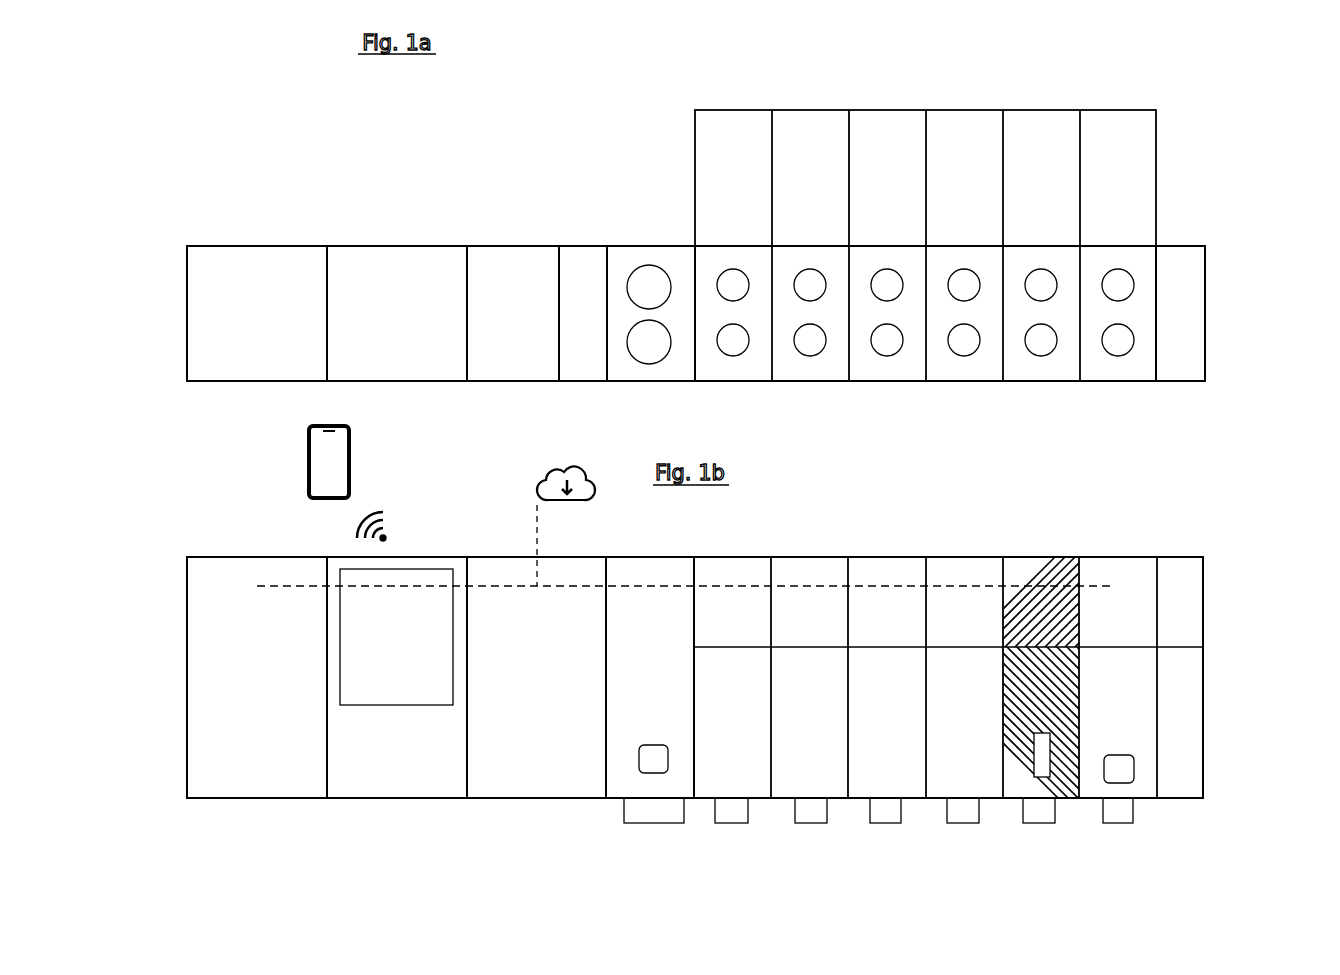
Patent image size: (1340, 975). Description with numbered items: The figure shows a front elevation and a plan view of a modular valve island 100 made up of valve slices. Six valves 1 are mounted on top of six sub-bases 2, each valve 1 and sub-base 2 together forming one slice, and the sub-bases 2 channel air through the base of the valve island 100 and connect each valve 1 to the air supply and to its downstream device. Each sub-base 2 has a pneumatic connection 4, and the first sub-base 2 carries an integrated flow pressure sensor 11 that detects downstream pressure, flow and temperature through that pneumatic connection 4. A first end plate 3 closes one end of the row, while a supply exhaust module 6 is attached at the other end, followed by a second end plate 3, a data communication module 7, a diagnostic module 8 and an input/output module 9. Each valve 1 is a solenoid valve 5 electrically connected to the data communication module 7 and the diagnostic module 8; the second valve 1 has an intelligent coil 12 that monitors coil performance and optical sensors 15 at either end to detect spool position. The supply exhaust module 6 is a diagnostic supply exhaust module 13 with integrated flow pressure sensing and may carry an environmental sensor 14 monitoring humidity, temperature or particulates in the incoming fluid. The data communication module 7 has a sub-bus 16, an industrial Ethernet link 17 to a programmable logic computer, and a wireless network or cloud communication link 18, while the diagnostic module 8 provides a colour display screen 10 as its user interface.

In FIG. 1A, the valve island 100 is at (272, 117).
In FIG. 1B, the valve island 100 is at (272, 911).
In FIG. 1A, the valve 1 is at (950, 209).
In FIG. 1A, the sub-base 2 is at (978, 422).
In FIG. 1A, the end plate 3 is at (920, 261).
In FIG. 1B, the pneumatic connection 4 is at (942, 843).
In FIG. 1B, the solenoid valve 5 is at (997, 677).
In FIG. 1A, the supply exhaust module 6 is at (648, 261).
In FIG. 1A, the data communication module 7 is at (505, 261).
In FIG. 1A, the diagnostic module 8 is at (397, 261).
In FIG. 1B, the diagnostic module 8 is at (397, 677).
In FIG. 1A, the input/output module 9 is at (257, 261).
In FIG. 1B, the input/output module 9 is at (257, 677).
In FIG. 1B, the colour display screen 10 is at (369, 730).
In FIG. 1B, the flow pressure sensor 11 is at (1220, 795).
In FIG. 1B, the intelligent coil 12 is at (1100, 678).
In FIG. 1B, the diagnostic supply exhaust module 13 is at (580, 747).
In FIG. 1B, the environmental sensor 14 is at (709, 832).
In FIG. 1B, the optical sensor 15 is at (1103, 831).
In FIG. 1B, the sub-bus 16 is at (598, 534).
In FIG. 1B, the industrial Ethernet link 17 is at (495, 507).
In FIG. 1B, the wireless network / cloud communication link 18 is at (249, 476).